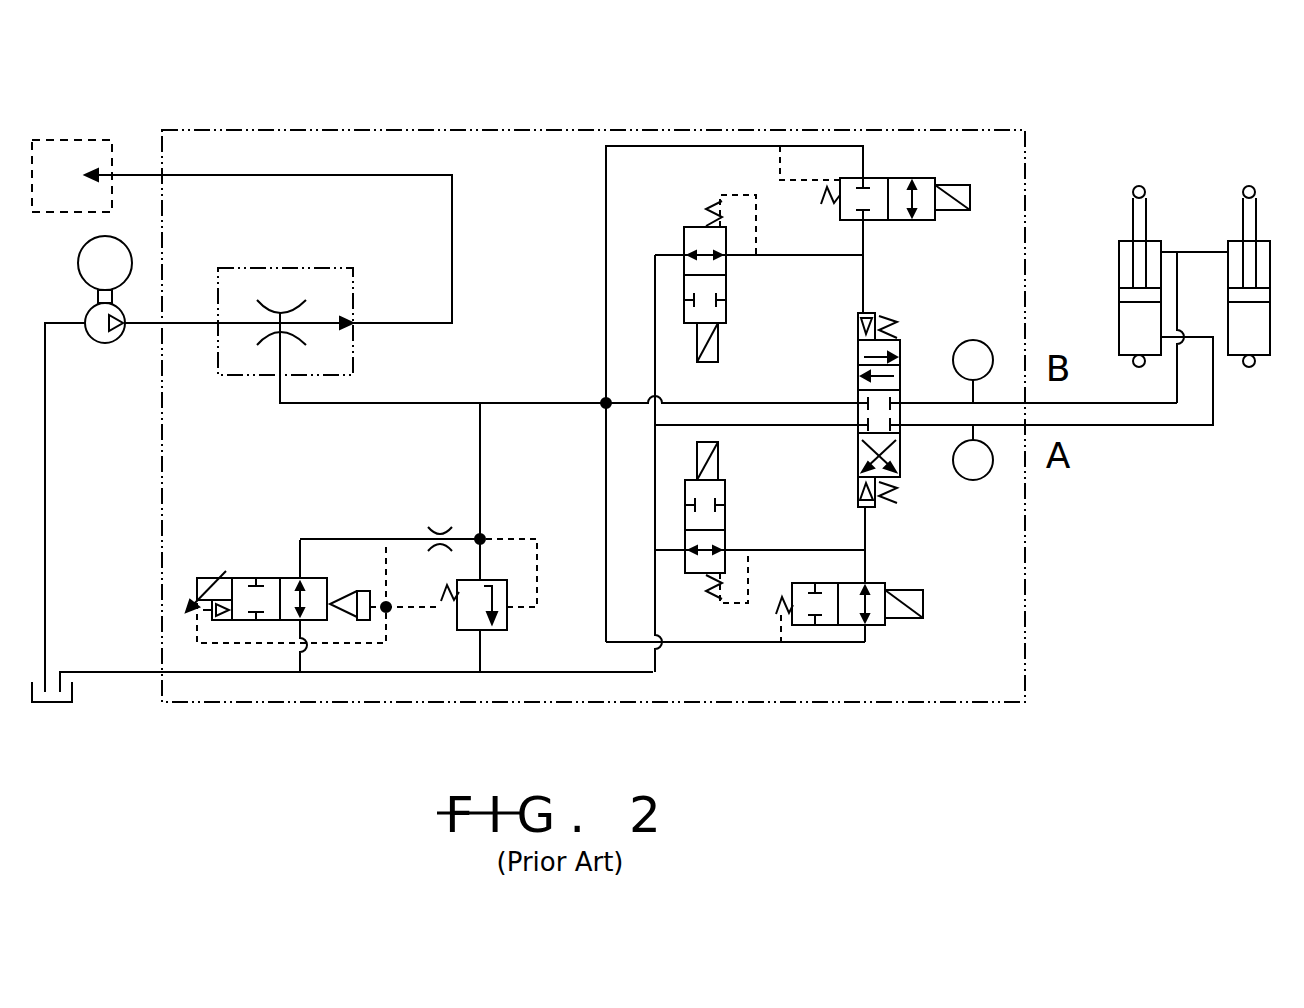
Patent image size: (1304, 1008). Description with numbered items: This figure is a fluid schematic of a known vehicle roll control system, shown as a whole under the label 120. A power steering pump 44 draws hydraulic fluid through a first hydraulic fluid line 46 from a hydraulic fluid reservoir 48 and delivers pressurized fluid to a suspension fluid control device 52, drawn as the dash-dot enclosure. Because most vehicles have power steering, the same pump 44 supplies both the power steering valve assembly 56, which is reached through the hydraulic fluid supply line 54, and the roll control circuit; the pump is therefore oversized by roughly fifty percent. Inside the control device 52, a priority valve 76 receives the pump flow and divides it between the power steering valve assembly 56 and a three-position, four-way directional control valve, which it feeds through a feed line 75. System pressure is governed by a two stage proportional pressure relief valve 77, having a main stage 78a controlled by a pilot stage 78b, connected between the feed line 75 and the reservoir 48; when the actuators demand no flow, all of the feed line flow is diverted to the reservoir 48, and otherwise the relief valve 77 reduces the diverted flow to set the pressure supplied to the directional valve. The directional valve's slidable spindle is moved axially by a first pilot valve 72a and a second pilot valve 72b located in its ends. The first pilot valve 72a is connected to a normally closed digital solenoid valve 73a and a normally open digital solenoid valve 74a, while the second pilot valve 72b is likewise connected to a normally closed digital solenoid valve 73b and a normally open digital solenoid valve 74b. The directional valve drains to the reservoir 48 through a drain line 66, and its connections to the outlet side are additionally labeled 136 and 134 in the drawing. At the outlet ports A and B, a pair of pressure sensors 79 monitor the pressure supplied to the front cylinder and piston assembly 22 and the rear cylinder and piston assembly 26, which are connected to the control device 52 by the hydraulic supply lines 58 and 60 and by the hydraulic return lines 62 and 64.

The hydraulic circuit 120 is at (700, 92).
The suspension fluid control device 52 is at (977, 129).
The power steering valve assembly 56 is at (57, 140).
The hydraulic fluid supply line 54 is at (136, 173).
The power steering pump 44 is at (86, 312).
The first hydraulic fluid line 46 is at (47, 578).
The hydraulic fluid reservoir 48 is at (74, 695).
The drain line 66 is at (124, 668).
The priority valve 76 is at (307, 268).
The feed line 75 is at (505, 400).
The two stage proportional pressure relief valve 77 is at (502, 506).
The main stage 78a is at (243, 573).
The pilot stage 78b is at (507, 648).
The normally open digital solenoid valve 74a is at (683, 223).
The normally open digital solenoid valve 74b is at (688, 577).
The first pilot valve 72a is at (858, 318).
The second pilot valve 72b is at (855, 492).
The normally closed digital solenoid valve 73a is at (912, 222).
The normally closed digital solenoid valve 73b is at (885, 625).
The pressure sensors 79 is at (985, 342).
The port 136 is at (787, 400).
The port 134 is at (812, 428).
The hydraulic supply line 60 is at (1110, 400).
The hydraulic return line 62 is at (1123, 425).
The front hydraulic supply line 58 is at (1212, 248).
The hydraulic return line 64 is at (1175, 340).
The rear cylinder and piston assembly 26 is at (1147, 213).
The front cylinder and piston assembly 22 is at (1256, 222).